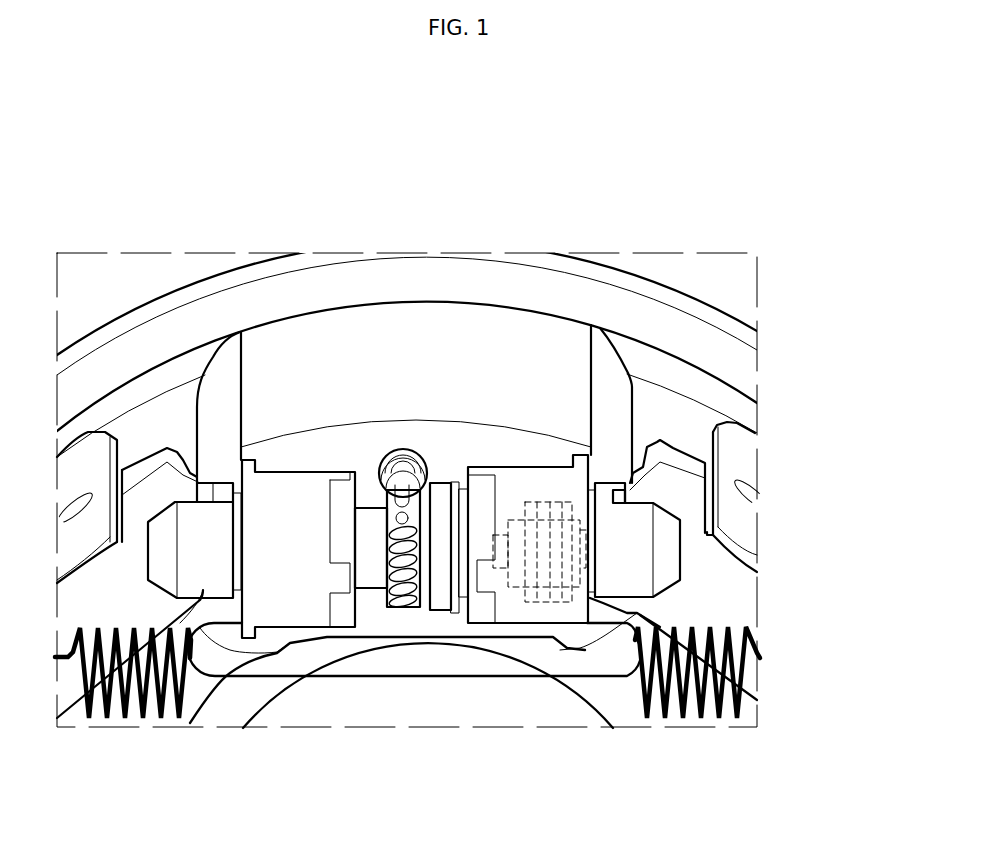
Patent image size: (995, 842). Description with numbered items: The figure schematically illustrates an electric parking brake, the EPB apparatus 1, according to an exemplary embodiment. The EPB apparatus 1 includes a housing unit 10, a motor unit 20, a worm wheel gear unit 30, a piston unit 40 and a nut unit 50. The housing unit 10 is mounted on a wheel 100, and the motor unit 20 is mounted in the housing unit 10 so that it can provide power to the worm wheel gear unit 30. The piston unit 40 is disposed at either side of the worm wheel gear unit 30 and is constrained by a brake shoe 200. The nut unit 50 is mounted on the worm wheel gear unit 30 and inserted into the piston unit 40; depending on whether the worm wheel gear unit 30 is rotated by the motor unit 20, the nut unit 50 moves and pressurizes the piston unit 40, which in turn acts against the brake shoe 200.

The EPB apparatus 1 is at (779, 143).
The wheel 100 is at (138, 313).
The brake shoe 200 is at (670, 477).
The housing unit 10 is at (590, 450).
The motor unit 20 is at (400, 453).
The worm wheel gear unit 30 is at (402, 587).
The piston unit 40 is at (537, 615).
The nut unit 50 is at (527, 503).